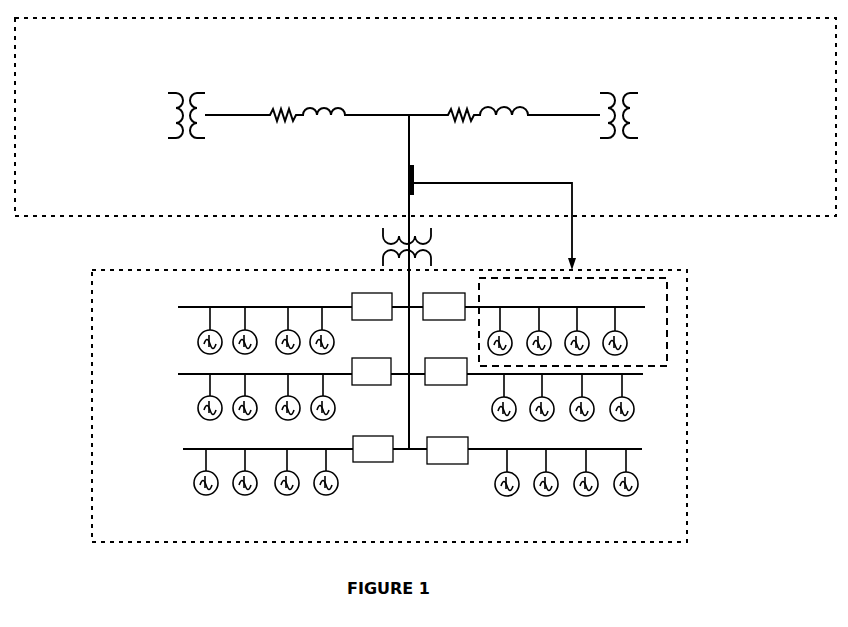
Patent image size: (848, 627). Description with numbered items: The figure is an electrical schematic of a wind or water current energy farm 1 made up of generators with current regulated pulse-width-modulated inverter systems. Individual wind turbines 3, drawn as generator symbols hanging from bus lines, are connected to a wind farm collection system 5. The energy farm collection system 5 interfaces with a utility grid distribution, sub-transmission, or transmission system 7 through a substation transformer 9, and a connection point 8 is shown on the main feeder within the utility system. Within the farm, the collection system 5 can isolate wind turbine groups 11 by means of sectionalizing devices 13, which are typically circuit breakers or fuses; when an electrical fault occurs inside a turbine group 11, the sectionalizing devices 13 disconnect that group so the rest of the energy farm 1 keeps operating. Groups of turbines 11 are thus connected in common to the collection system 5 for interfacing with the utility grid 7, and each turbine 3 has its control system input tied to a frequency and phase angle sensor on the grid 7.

The wind or water current energy farm 1 is at (389, 406).
The wind turbines 3 is at (183, 460).
The wind farm collection system 5 is at (342, 460).
The utility grid distribution, sub-transmission, or transmission system 7 is at (425, 233).
The circuit breaker / point of common coupling 8 is at (556, 183).
The substation transformer 9 is at (399, 247).
The wind turbine groups 11 is at (573, 322).
The sectionalizing devices 13 is at (410, 378).